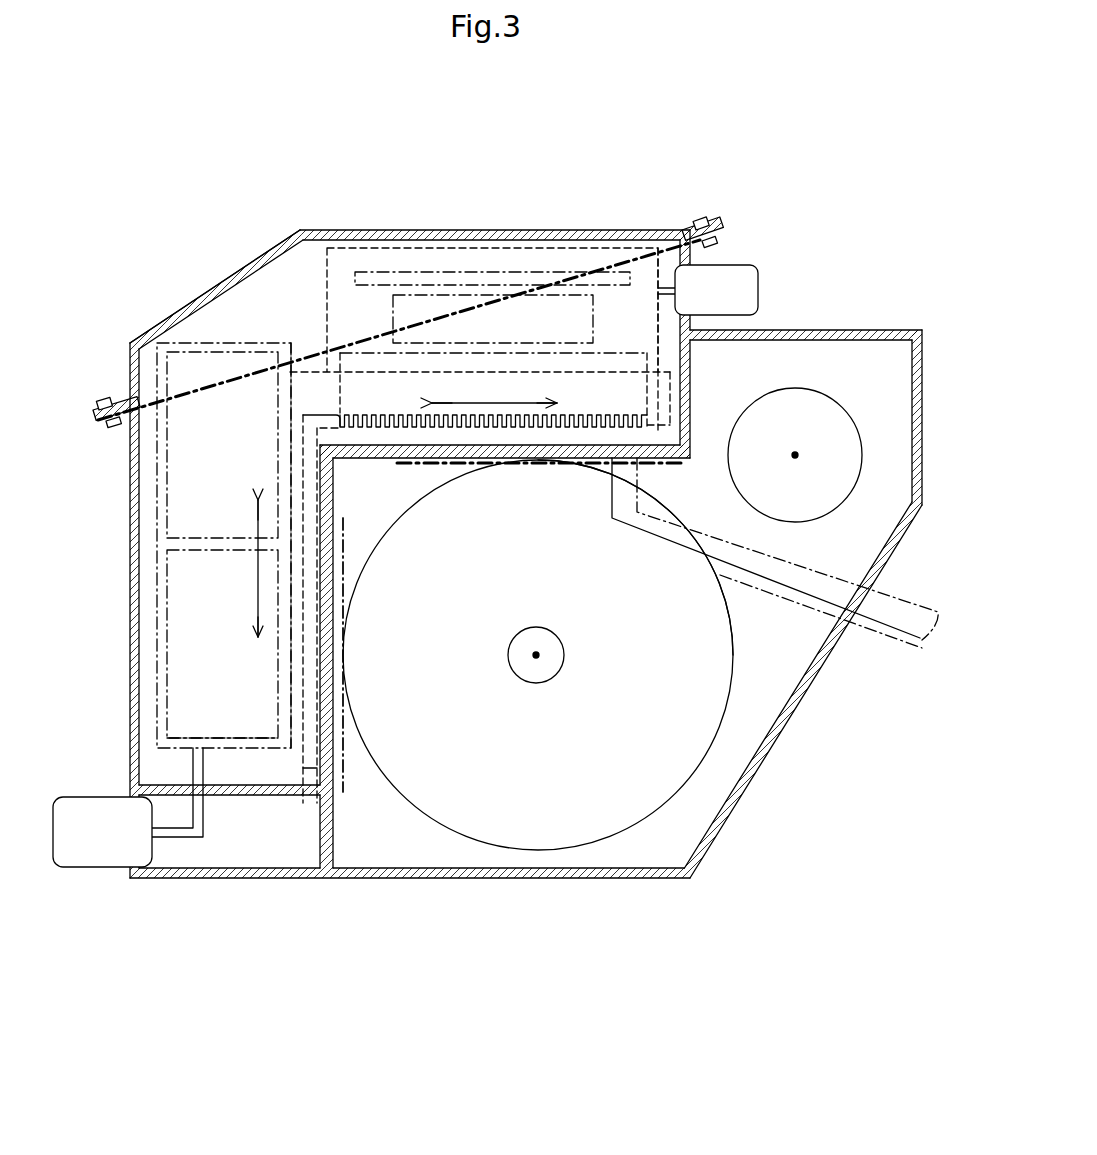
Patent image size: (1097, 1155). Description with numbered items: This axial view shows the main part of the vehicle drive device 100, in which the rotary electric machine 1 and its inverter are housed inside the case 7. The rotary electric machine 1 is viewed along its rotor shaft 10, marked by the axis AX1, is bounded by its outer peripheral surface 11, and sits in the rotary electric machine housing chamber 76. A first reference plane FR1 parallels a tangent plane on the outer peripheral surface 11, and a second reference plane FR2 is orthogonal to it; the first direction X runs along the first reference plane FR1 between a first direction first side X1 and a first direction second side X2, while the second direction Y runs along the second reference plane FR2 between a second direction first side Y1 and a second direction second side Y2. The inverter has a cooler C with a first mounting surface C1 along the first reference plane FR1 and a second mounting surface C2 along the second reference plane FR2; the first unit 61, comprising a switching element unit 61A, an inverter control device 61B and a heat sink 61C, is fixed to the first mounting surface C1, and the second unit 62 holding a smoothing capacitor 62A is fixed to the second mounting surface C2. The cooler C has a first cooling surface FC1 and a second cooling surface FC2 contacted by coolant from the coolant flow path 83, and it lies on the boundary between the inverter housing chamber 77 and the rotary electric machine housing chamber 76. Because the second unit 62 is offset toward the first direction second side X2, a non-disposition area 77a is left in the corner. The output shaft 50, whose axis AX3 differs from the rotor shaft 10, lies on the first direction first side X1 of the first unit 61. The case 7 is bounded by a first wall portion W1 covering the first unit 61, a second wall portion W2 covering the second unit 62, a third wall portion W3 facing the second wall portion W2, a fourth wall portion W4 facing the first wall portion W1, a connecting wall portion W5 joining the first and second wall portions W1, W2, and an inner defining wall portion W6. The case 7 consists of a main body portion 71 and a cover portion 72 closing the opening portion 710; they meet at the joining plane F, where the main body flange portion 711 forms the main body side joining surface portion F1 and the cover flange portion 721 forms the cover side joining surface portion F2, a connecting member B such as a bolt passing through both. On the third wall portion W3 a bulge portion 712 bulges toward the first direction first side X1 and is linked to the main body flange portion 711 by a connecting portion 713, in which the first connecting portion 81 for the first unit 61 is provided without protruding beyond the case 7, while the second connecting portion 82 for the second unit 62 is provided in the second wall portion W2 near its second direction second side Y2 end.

The vehicle drive device 100 is at (812, 66).
The rotary electric machine 1 is at (743, 722).
The outer peripheral surface 11 is at (695, 790).
The rotor shaft 10 is at (565, 677).
The drum rotation axis AX1 is at (537, 655).
The case 7 is at (506, 516).
The cover portion 72 is at (415, 140).
The main body portion 71 is at (824, 314).
The opening portion 710 is at (302, 288).
The main body flange portion 711 is at (734, 250).
The bulge portion 712 is at (893, 308).
The connecting portion 713 is at (702, 324).
The cover flange portion 721 is at (712, 215).
The first wall portion W1 is at (512, 222).
The second wall portion W2 is at (129, 535).
The third wall portion W3 is at (929, 462).
The fourth wall portion W4 is at (545, 880).
The connecting wall portion W5 is at (180, 292).
The defining wall portion W6 is at (317, 834).
The first unit 61 is at (586, 246).
The switching element unit 61A is at (393, 307).
The inverter control device 61B is at (371, 270).
The heat sink 61C is at (605, 352).
The second unit 62 is at (157, 632).
The smoothing capacitor 62A is at (167, 462).
The joining plane F is at (468, 305).
The main body side joining surface portion F1 is at (724, 242).
The cover side joining surface portion F2 is at (692, 231).
The connecting member B is at (103, 396).
The cooler C is at (290, 403).
The first mounting surface C1 is at (694, 352).
The second mounting surface C2 is at (290, 698).
The inverter housing chamber 77 is at (262, 782).
The non-disposition area 77a is at (255, 334).
The rotary electric machine housing chamber 76 is at (395, 854).
The first connecting portion 81 is at (770, 285).
The second connecting portion 82 is at (97, 880).
The coolant flow path 83 is at (884, 636).
The output shaft 50 is at (841, 397).
The roller axis AX3 is at (795, 455).
The first reference plane FR1 is at (445, 466).
The second reference plane FR2 is at (345, 547).
The first cooling surface FC1 is at (540, 466).
The second cooling surface FC2 is at (288, 760).
The first direction X is at (494, 387).
The first direction first side X1 is at (565, 405).
The first direction second side X2 is at (424, 405).
The second direction Y is at (247, 568).
The second direction first side Y1 is at (259, 495).
The second direction second side Y2 is at (259, 643).